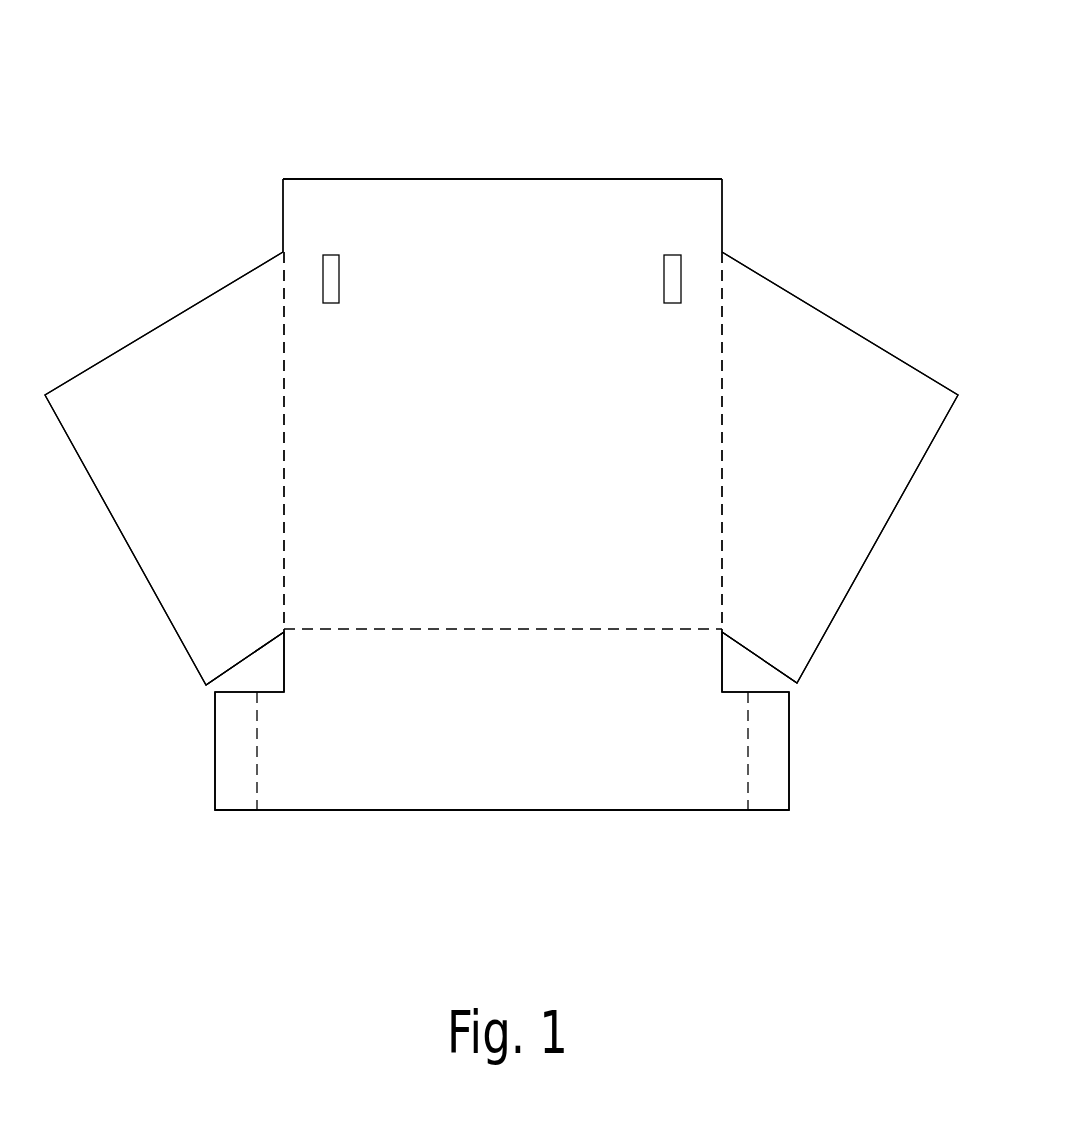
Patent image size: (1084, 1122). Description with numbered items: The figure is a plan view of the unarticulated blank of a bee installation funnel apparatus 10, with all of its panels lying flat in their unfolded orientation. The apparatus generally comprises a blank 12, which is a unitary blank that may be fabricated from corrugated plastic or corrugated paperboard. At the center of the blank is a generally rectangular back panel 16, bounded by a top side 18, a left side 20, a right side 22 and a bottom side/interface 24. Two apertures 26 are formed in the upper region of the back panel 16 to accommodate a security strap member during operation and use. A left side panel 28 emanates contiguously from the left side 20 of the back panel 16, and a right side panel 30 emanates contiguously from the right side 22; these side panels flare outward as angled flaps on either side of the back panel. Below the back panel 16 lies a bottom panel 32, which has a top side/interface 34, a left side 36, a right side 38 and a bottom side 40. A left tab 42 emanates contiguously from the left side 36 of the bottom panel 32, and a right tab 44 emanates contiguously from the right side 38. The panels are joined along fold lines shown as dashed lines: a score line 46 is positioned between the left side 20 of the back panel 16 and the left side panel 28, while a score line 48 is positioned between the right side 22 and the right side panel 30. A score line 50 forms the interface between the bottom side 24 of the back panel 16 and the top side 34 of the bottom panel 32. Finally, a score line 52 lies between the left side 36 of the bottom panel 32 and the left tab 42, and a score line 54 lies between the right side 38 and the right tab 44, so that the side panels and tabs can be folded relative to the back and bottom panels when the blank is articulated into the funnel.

The bee installation funnel apparatus 10 is at (745, 108).
The blank 12 is at (403, 345).
The back panel 16 is at (483, 385).
The top side 18 is at (494, 179).
The left side 20 is at (282, 209).
The right side 22 is at (722, 203).
The bottom side/interface 24 is at (351, 623).
The apertures 26 is at (332, 250).
The left side panel 28 is at (172, 431).
The right side panel 30 is at (815, 431).
The bottom panel 32 is at (484, 736).
The top side/interface 34 is at (402, 662).
The left side 36 is at (272, 663).
The right side 38 is at (735, 667).
The bottom side 40 is at (492, 811).
The left tab 42 is at (228, 733).
The right tab 44 is at (768, 741).
The score line 46 is at (283, 392).
The score line 48 is at (722, 368).
The score line 50 is at (377, 632).
The score line 52 is at (241, 823).
The score line 54 is at (763, 820).